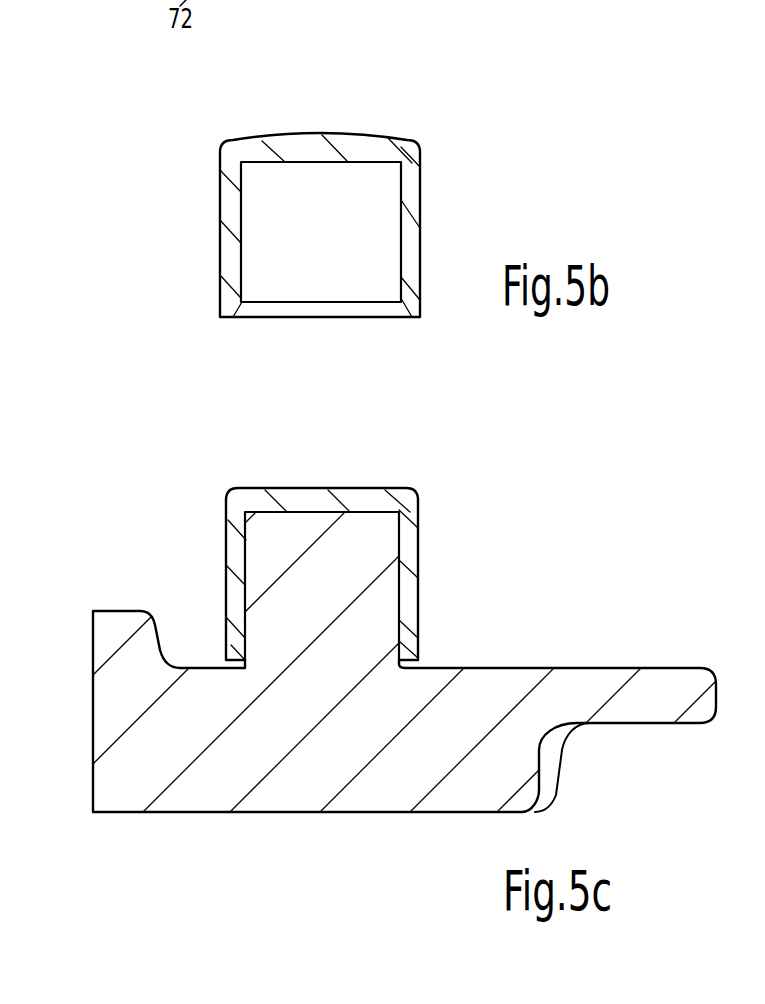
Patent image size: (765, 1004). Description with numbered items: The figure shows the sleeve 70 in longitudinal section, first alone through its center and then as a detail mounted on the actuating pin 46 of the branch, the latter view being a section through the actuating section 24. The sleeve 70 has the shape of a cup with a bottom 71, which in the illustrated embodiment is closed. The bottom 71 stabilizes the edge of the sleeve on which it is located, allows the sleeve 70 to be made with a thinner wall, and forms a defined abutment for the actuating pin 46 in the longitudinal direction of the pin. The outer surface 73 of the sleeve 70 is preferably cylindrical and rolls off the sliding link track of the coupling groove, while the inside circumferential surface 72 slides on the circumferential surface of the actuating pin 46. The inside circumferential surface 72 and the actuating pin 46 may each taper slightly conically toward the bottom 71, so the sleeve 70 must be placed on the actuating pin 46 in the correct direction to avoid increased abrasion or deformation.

In FIG. 5C, the actuating section 24 is at (413, 761).
In FIG. 5C, the actuating pin 46 is at (363, 618).
In FIG. 5B, the sleeve 70 is at (392, 124).
In FIG. 5C, the sleeve 70 is at (418, 498).
In FIG. 5B, the bottom 71 is at (306, 152).
In FIG. 5C, the bottom 71 is at (325, 497).
In FIG. 5B, the inside circumferential surface 72 is at (243, 226).
In FIG. 5B, the outer surface 73 is at (421, 207).
In FIG. 5C, the outer surface 73 is at (420, 568).